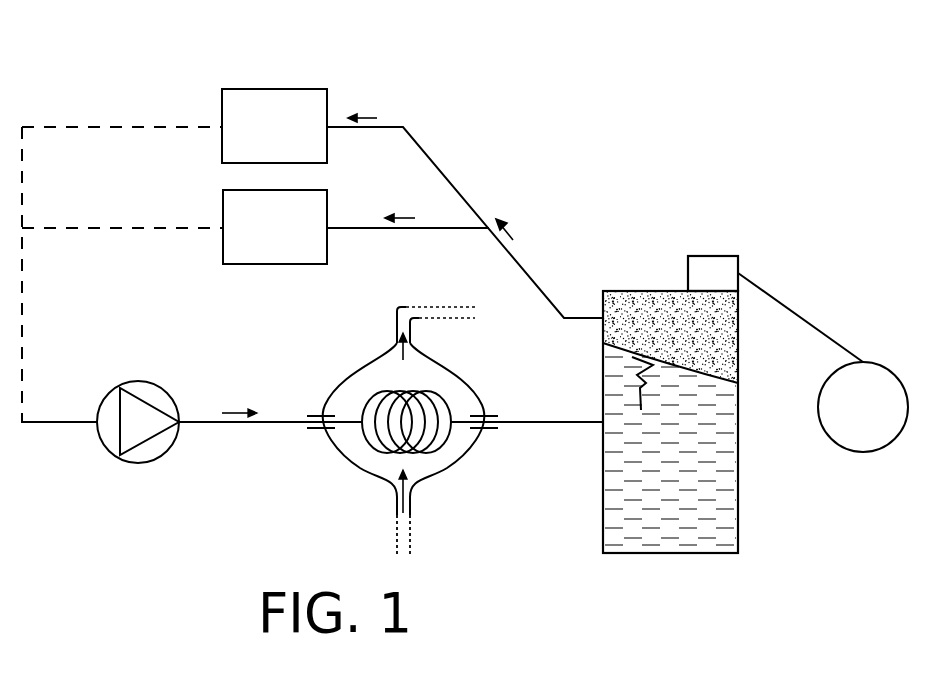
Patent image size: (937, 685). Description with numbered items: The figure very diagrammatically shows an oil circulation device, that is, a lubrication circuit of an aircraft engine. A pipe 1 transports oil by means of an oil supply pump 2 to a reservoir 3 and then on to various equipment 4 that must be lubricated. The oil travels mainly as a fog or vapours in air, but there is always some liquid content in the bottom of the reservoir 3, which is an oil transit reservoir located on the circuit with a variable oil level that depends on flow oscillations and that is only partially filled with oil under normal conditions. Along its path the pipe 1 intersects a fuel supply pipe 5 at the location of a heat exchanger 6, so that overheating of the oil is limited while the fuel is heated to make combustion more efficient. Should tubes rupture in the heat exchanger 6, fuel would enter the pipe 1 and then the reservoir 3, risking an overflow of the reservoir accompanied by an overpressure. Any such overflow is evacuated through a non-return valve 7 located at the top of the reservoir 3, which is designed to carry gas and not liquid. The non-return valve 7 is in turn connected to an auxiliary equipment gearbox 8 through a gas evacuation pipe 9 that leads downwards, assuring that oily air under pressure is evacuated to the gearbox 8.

The pipe 1 is at (257, 423).
The oil supply pump 2 is at (145, 463).
The reservoir 3 is at (665, 554).
The equipment 4 is at (289, 70).
The fuel supply pipe 5 is at (396, 516).
The heat exchanger 6 is at (470, 460).
The non-return valve 7 is at (713, 256).
The auxiliary equipment gearbox 8 is at (848, 440).
The gas evacuation pipe 9 is at (803, 318).